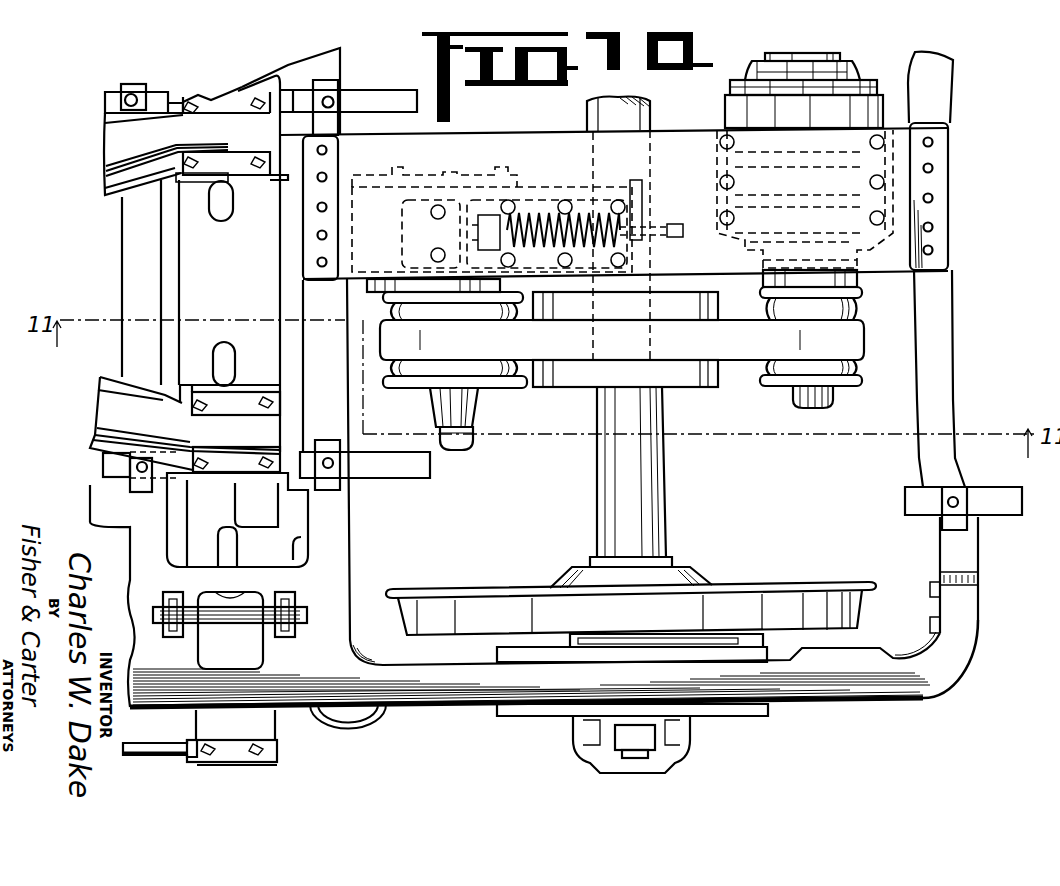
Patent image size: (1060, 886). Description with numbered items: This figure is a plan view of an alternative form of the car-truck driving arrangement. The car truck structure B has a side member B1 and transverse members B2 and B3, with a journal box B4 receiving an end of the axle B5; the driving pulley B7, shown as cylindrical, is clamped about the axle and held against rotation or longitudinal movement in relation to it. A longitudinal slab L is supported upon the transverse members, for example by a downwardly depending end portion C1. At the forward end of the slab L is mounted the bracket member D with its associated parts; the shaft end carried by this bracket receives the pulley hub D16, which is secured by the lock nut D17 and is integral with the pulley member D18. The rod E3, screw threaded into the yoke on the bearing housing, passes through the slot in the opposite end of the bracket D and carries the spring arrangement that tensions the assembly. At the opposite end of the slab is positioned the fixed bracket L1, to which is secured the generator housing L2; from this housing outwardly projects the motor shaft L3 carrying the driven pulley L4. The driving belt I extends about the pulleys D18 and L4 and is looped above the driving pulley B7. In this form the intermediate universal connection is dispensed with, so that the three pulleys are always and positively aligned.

The car truck structure B is at (780, 598).
The side member B1 is at (425, 693).
The transverse member B2 is at (345, 507).
The transverse member B3 is at (947, 335).
The journal box B4 is at (703, 718).
The axle B5 is at (653, 492).
The driving pulley B7 is at (570, 380).
The downwardly depending end portion C1 is at (323, 248).
The bracket member D is at (540, 200).
The pulley hub D16 is at (470, 415).
The lock nut D17 is at (466, 443).
The pulley member D18 is at (490, 375).
The rod E3 is at (663, 223).
The driving belt I is at (742, 350).
The longitudinal slab L is at (667, 133).
The fixed bracket L1 is at (717, 160).
The generator housing L2 is at (840, 103).
The motor shaft L3 is at (817, 408).
The driven pulley L4 is at (860, 367).